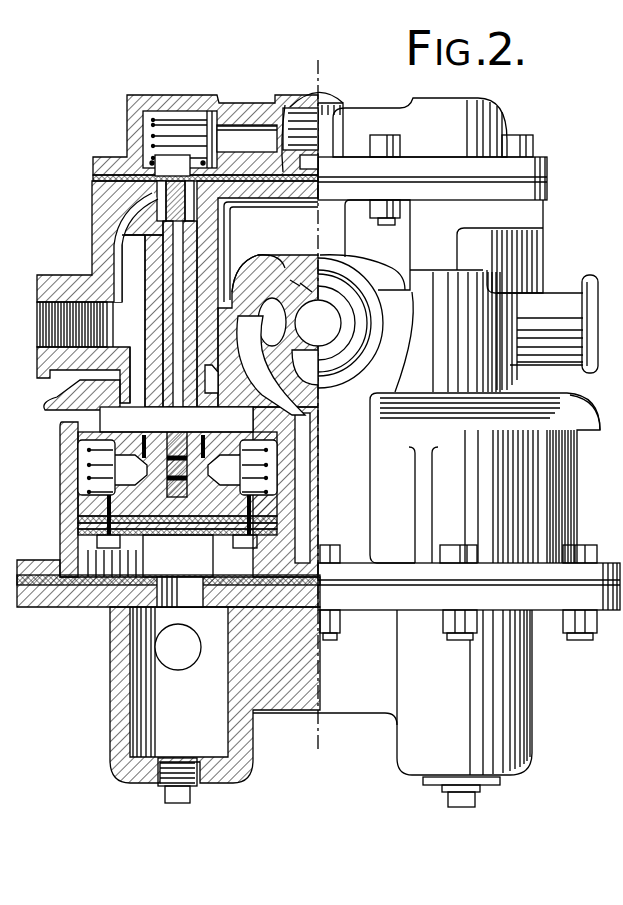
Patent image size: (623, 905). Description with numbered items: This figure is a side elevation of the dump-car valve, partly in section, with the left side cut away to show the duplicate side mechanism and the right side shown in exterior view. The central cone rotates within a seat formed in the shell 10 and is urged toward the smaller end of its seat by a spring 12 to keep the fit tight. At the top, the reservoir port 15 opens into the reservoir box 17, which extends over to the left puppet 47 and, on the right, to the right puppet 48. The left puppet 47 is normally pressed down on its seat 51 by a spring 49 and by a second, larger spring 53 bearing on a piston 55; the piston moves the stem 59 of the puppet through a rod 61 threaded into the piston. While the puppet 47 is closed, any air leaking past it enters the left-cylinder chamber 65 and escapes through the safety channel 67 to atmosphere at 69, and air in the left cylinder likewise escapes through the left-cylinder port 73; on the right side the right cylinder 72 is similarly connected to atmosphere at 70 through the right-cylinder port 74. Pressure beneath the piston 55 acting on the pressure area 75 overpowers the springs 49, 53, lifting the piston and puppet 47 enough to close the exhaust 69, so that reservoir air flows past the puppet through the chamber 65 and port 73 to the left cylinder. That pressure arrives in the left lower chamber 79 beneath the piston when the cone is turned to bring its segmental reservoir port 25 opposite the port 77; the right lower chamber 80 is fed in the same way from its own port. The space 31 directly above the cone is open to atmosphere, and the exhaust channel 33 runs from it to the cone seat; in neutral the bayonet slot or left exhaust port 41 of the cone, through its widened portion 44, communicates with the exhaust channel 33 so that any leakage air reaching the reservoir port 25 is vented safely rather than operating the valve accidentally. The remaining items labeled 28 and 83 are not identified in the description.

The shell 10 is at (383, 334).
The spring 12 is at (339, 323).
The reservoir port 15 is at (326, 98).
The reservoir box 17 is at (247, 140).
The reservoir port of the cone 25 is at (305, 367).
The spring 28 is at (284, 124).
The space above the cone 31 is at (271, 252).
The exhaust channel 33 is at (258, 274).
The left exhaust port 41 is at (302, 287).
The widened portion 44 is at (292, 280).
The left puppet 47 is at (178, 164).
The right puppet 48 is at (432, 161).
The spring 49 is at (152, 122).
The seat 51 is at (95, 192).
The second spring 53 is at (88, 450).
The piston 55 is at (200, 489).
The stem 59 is at (172, 195).
The rod 61 is at (178, 400).
The left-cylinder chamber 65 is at (135, 300).
The safety channel 67 is at (142, 410).
The atmosphere exhaust 69 is at (50, 430).
The atmosphere exhaust 70 is at (580, 440).
The right cylinder 72 is at (270, 365).
The left-cylinder port 73 is at (42, 337).
The right-cylinder port 74 is at (597, 365).
The pressure area 75 is at (178, 530).
The port 77 is at (296, 553).
The left lower chamber 79 is at (204, 669).
The right lower chamber 80 is at (436, 676).
The port opening 83 is at (178, 647).